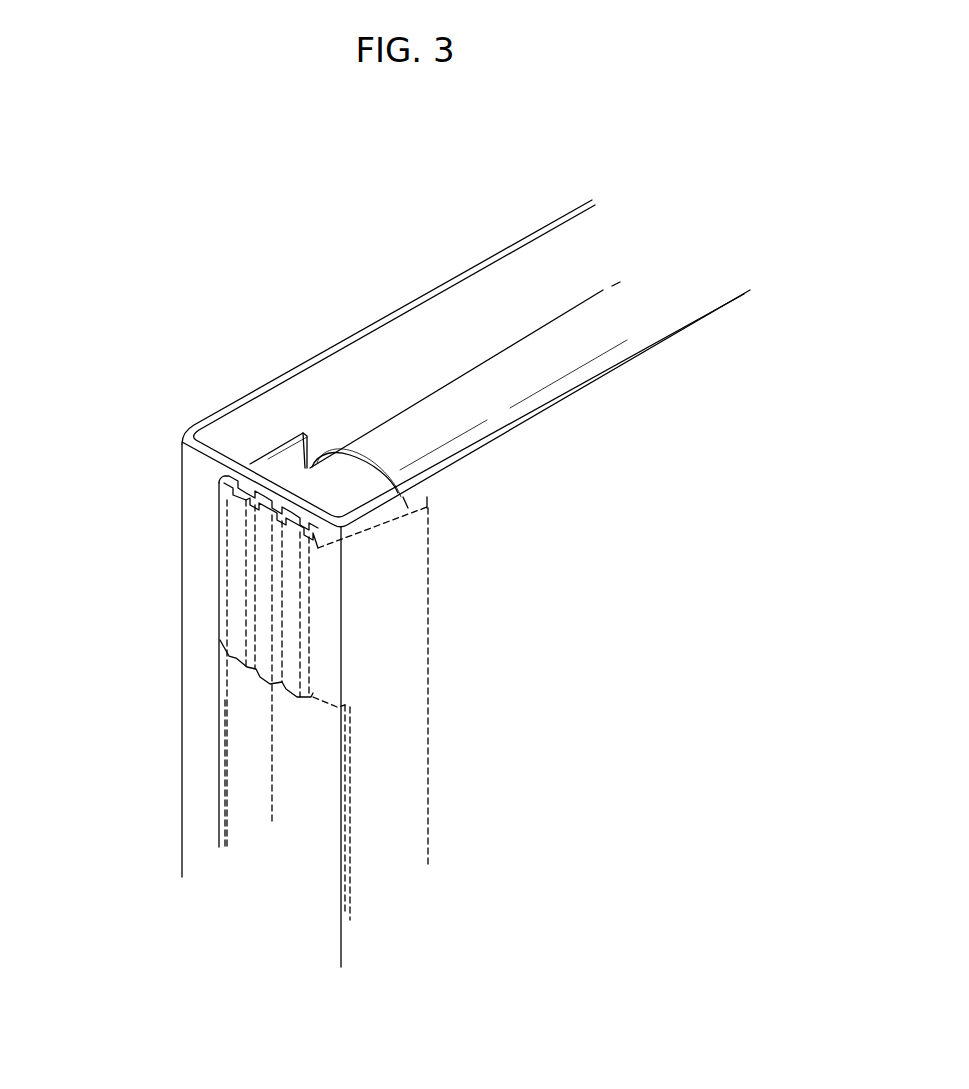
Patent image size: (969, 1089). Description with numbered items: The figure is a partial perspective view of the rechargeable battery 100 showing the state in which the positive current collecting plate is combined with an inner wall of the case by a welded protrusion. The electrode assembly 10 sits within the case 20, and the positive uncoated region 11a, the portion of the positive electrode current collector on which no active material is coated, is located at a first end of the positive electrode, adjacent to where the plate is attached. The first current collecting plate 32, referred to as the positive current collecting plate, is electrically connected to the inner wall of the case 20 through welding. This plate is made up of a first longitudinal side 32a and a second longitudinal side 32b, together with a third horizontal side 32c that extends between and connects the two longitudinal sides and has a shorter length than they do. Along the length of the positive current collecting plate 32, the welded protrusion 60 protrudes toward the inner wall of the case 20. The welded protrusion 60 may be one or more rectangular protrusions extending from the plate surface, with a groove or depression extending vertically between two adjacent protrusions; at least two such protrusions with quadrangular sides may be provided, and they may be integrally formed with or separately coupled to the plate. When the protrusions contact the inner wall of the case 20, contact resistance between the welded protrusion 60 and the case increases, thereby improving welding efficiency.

The rechargeable battery 100 is at (257, 218).
The electrode assembly 10 is at (450, 413).
The positive uncoated region 11a is at (305, 490).
The case 20 is at (183, 691).
The first current collecting plate 32 is at (388, 577).
The first longitudinal side 32a is at (395, 793).
The second longitudinal side 32b is at (246, 760).
The third horizontal side 32c is at (325, 655).
The welded protrusion 60 is at (290, 532).